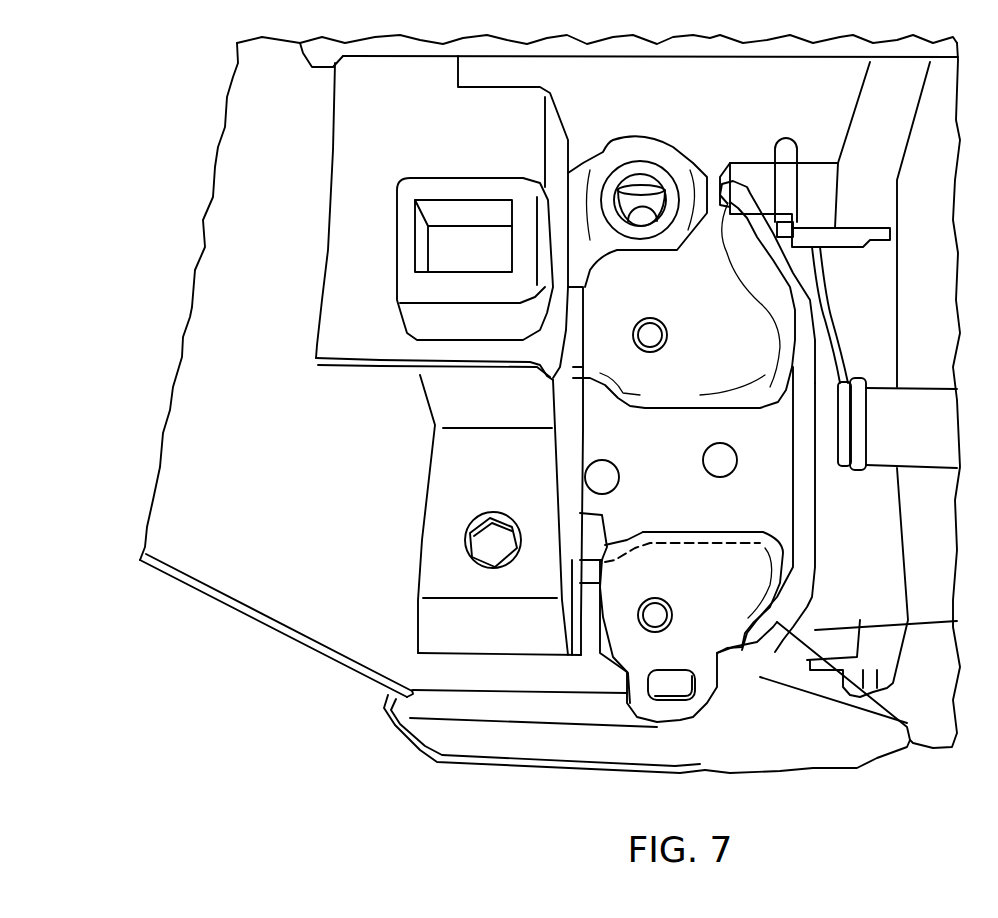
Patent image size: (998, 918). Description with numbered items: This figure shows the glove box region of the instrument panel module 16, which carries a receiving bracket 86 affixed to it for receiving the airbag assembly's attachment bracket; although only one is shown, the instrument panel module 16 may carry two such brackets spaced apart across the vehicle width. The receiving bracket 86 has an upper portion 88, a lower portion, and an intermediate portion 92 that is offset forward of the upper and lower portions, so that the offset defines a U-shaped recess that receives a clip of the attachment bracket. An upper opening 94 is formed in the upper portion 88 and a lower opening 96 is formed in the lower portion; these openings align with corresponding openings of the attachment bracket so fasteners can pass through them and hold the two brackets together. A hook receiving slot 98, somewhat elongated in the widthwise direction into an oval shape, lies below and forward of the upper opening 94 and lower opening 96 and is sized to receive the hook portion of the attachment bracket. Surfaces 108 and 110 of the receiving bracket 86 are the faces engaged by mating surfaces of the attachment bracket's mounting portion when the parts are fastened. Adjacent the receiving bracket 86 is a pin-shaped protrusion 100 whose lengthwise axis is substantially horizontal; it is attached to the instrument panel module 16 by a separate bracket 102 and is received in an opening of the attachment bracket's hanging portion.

The instrument panel module 16 is at (495, 620).
The receiving bracket 86 is at (718, 505).
The upper portion 88 is at (762, 316).
The intermediate portion 92 is at (762, 492).
The upper opening 94 is at (652, 318).
The lower opening 96 is at (672, 614).
The hook receiving slot 98 is at (688, 692).
The protrusion 100 is at (785, 138).
The bracket 102 is at (823, 193).
The surface 108 is at (687, 392).
The surface 110 is at (657, 560).